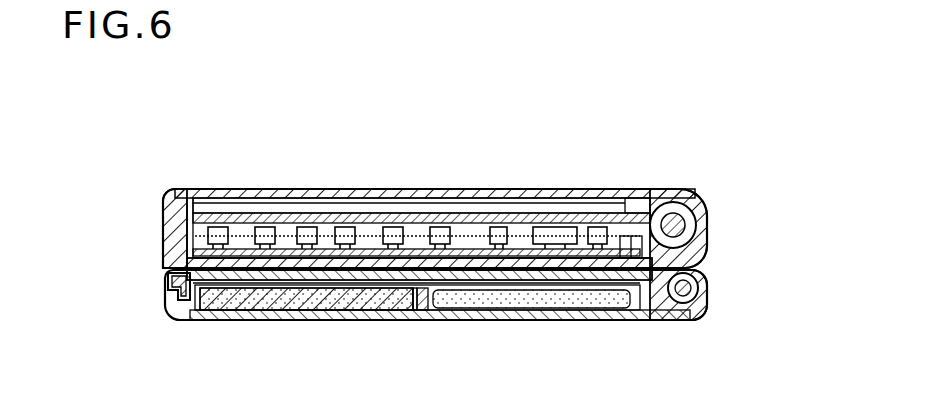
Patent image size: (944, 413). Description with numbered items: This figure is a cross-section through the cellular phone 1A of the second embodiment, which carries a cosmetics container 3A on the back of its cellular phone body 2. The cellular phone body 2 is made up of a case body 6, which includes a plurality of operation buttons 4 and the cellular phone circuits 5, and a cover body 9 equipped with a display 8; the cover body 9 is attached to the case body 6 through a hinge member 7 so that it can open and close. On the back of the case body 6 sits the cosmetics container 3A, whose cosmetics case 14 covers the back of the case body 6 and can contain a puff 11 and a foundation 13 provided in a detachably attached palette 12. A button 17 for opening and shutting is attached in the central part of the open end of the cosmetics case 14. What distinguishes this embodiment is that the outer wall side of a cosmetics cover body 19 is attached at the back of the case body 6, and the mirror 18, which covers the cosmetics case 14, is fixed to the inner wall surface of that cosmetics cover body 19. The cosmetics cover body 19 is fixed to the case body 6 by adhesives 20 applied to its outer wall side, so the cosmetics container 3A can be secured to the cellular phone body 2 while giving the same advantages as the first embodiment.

The cellular phone 1A is at (640, 133).
The cellular phone body 2 is at (292, 188).
The cosmetics container 3A is at (362, 321).
The operation buttons 4 is at (218, 227).
The cellular phone circuits 5 is at (326, 249).
The case body 6 is at (166, 235).
The hinge member 7 is at (707, 200).
The display 8 is at (362, 214).
The cover body 9 is at (412, 201).
The puff 11 is at (533, 299).
The palette 12 is at (236, 311).
The foundation 13 is at (297, 297).
The cosmetics case 14 is at (424, 300).
The button 17 is at (166, 297).
The mirror 18 is at (572, 282).
The cosmetics cover body 19 is at (483, 269).
The adhesives 20 is at (387, 273).